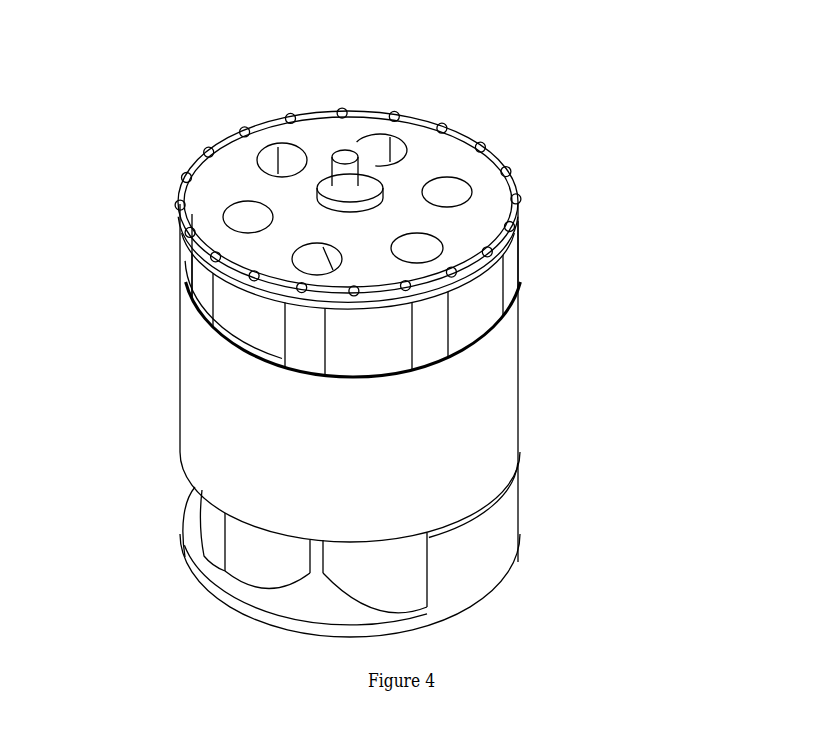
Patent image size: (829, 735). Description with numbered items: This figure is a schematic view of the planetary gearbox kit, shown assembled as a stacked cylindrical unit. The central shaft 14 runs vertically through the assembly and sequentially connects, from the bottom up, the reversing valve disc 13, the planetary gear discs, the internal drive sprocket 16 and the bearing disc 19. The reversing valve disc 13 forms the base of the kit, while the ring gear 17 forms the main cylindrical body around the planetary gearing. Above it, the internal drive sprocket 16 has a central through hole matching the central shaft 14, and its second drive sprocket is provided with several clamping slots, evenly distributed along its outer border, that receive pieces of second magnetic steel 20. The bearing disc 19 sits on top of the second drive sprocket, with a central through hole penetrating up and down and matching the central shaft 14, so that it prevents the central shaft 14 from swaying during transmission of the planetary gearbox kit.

The reversing valve disc 13 is at (467, 562).
The central shaft 14 is at (363, 148).
The internal drive sprocket 16 is at (483, 305).
The ring gear 17 is at (477, 425).
The bearing disc 19 is at (447, 163).
The second magnetic steel 20 is at (183, 292).